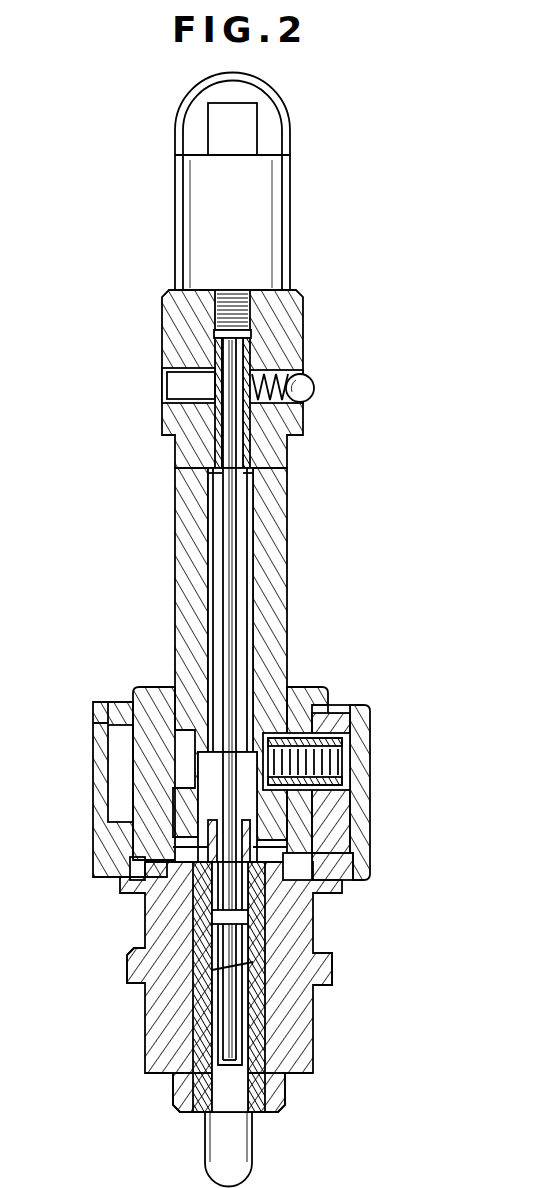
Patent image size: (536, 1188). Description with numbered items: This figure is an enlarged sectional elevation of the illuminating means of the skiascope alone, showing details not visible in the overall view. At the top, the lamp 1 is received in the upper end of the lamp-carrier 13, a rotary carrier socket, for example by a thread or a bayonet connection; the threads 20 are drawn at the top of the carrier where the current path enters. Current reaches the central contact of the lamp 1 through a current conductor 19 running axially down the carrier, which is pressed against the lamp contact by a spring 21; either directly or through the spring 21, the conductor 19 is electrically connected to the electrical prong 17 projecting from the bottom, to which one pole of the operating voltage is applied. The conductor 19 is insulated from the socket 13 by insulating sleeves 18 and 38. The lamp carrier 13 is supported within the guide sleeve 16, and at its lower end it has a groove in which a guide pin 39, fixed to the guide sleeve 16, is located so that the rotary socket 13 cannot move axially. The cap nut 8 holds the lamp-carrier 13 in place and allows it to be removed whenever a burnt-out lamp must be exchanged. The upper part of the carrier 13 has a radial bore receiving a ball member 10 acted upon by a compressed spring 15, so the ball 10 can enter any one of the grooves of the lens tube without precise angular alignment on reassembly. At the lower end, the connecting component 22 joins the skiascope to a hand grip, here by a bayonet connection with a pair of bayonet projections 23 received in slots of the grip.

The lamp 1 is at (283, 238).
The cap nut 8 is at (363, 798).
The ball member 10 is at (315, 388).
The lamp-carrier 13 is at (195, 497).
The compressed spring 15 is at (280, 376).
The guide sleeve 16 is at (300, 697).
The electrical prong 17 is at (232, 1151).
The insulating sleeve 18 is at (192, 1082).
The current conductor 19 is at (232, 641).
The threads 20 is at (214, 325).
The spring 21 is at (212, 947).
The connecting component 22 is at (300, 1043).
The bayonet projections 23 is at (128, 965).
The insulating sleeve 38 is at (162, 418).
The guide pin 39 is at (347, 735).